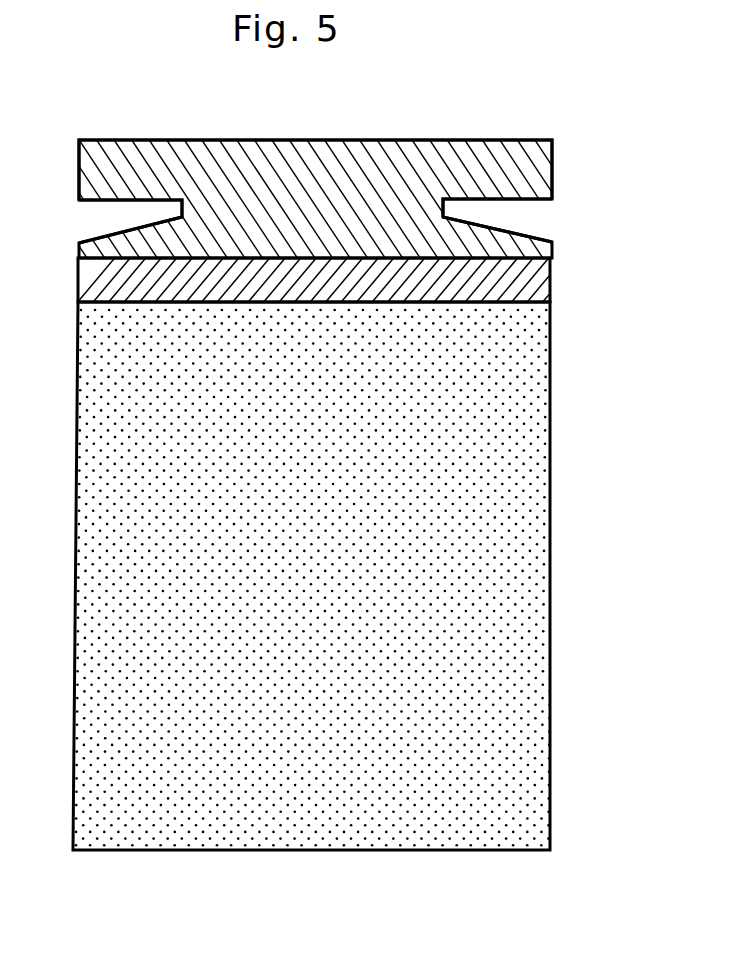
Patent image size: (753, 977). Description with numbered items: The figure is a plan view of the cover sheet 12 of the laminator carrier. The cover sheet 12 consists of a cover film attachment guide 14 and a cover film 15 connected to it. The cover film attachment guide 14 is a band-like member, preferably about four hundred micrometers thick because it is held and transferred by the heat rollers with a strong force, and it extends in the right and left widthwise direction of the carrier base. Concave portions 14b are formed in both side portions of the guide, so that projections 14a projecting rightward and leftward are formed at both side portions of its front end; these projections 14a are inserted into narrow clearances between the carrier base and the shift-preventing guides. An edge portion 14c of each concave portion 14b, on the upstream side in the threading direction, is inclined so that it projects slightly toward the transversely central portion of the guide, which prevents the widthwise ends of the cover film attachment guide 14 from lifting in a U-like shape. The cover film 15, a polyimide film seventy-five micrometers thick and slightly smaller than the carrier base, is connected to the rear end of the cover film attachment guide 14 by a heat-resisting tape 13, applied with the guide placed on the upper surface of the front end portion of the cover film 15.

The cover sheet 12 is at (643, 342).
The heat-resisting tape 13 is at (513, 302).
The cover film attachment guide 14 is at (462, 140).
The projections 14a is at (78, 168).
The concave portions 14b is at (172, 208).
The edge portion 14c is at (533, 225).
The cover film 15 is at (540, 545).